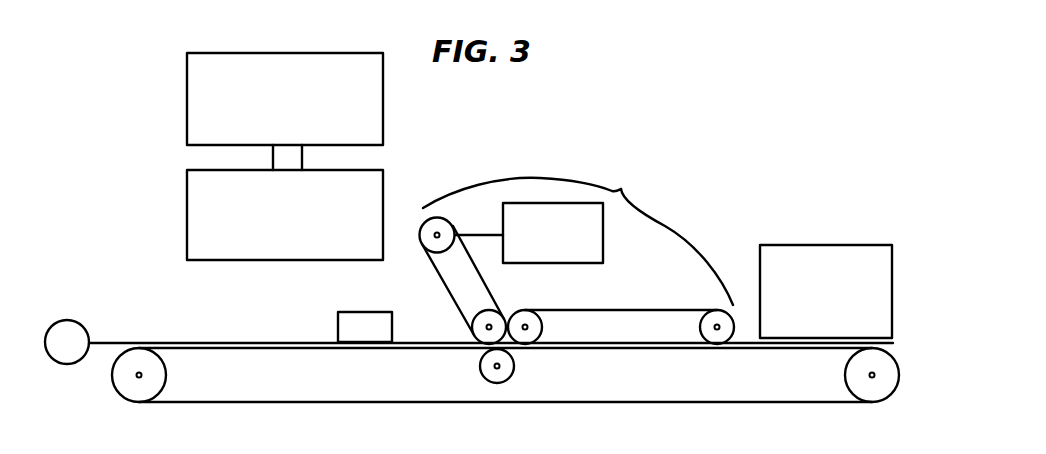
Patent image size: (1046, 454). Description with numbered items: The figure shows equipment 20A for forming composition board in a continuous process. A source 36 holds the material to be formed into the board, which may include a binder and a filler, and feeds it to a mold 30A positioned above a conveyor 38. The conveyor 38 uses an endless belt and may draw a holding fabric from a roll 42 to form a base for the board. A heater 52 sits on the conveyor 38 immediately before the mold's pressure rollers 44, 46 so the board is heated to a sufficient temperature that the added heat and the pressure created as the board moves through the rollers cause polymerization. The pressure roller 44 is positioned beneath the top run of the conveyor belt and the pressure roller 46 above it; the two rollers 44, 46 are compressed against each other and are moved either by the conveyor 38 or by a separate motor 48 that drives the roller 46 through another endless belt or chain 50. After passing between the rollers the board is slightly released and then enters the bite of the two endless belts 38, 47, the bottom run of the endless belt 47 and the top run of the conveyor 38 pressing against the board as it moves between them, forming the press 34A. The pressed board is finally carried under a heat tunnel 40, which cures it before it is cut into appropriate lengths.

The equipment 20A is at (645, 142).
The mold 30A is at (372, 195).
The press 34A is at (670, 235).
The source 36 is at (377, 118).
The conveyor 38 is at (325, 378).
The heat tunnel 40 is at (827, 257).
The roll 42 is at (77, 330).
The pressure roller 44 is at (512, 367).
The pressure roller 46 is at (464, 315).
The endless belt 47 is at (638, 307).
The motor 48 is at (592, 240).
The endless belt or chain 50 is at (470, 282).
The heater 52 is at (348, 322).